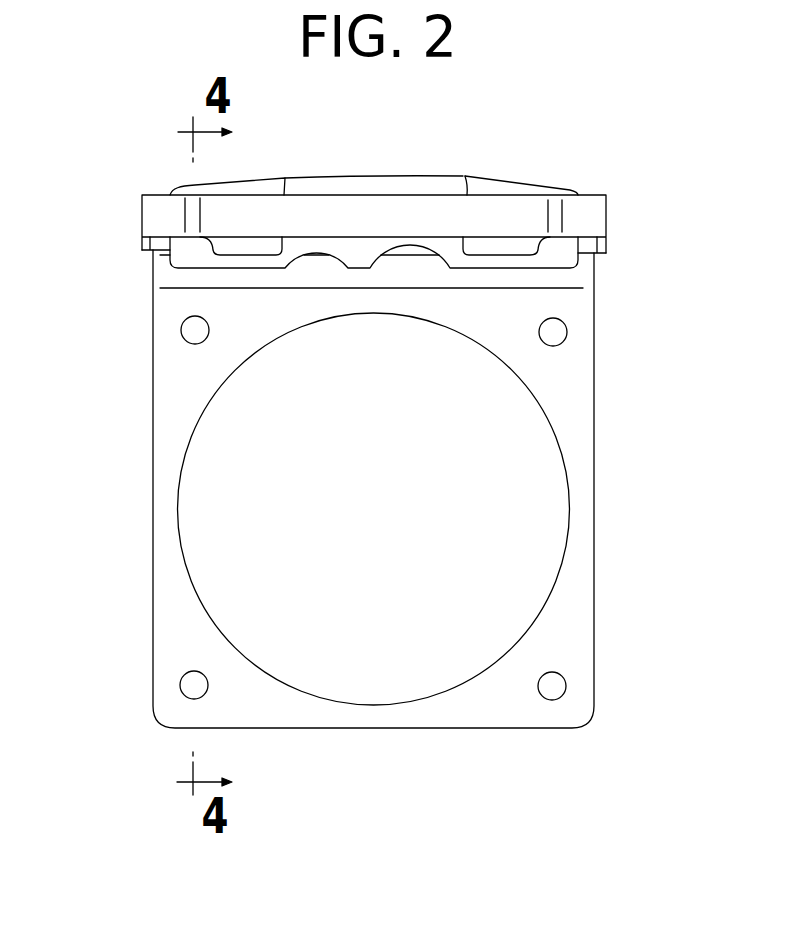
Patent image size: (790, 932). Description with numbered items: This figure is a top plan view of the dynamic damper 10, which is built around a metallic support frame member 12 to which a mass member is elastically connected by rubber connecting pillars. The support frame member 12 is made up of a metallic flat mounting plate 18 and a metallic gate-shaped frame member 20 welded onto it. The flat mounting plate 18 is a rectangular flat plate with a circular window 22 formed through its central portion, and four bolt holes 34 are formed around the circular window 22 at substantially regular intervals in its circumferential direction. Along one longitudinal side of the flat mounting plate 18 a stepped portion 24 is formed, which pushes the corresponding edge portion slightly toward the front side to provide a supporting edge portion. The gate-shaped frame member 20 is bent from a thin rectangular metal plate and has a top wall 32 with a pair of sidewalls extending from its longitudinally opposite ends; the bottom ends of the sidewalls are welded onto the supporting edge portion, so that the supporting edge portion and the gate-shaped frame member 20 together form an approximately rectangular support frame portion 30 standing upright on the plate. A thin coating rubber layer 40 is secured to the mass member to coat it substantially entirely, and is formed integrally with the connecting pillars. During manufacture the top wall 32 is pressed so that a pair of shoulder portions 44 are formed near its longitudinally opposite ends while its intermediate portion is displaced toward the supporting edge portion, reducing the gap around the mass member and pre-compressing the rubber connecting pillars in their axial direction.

The dynamic damper 10 is at (474, 137).
The support frame member 12 is at (683, 240).
The flat mounting plate 18 is at (606, 308).
The gate-shaped frame member 20 is at (423, 251).
The circular window 22 is at (533, 397).
The stepped portion 24 is at (176, 281).
The support frame portion 30 is at (127, 220).
The top wall 32 is at (352, 210).
The bolt holes 34 is at (190, 326).
The coating rubber layer 40 is at (297, 183).
The shoulder portions 44 is at (192, 198).